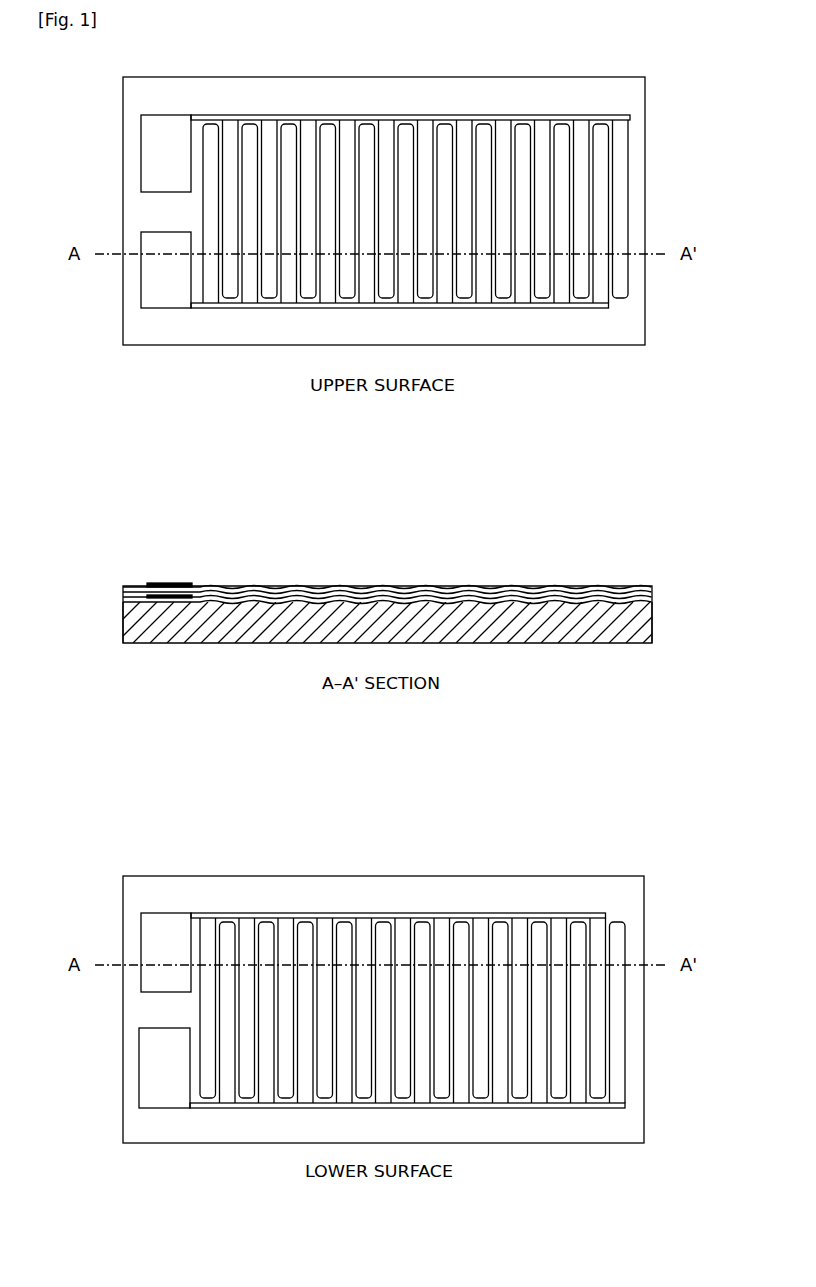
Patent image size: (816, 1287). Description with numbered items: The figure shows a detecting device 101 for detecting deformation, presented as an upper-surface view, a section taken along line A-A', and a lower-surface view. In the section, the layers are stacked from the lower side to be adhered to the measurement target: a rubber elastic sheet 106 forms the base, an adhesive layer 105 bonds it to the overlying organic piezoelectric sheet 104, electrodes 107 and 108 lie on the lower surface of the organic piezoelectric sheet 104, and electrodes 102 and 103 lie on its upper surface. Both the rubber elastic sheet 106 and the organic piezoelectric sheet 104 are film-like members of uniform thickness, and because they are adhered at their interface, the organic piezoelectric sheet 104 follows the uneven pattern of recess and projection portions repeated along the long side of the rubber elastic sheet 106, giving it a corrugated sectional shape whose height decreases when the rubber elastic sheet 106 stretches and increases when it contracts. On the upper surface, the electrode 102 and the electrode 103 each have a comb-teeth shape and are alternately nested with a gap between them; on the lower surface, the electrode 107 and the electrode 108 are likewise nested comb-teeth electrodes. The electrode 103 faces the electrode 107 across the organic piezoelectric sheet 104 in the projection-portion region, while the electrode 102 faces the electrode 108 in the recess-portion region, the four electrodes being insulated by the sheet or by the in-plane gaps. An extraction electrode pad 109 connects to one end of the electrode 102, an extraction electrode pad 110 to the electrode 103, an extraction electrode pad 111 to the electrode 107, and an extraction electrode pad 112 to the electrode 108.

The detecting device 101 is at (290, 1224).
The electrode 102 is at (232, 285).
The electrode 103 is at (210, 285).
The organic piezoelectric sheet 104 is at (652, 588).
The adhesive layer 105 is at (652, 597).
The rubber elastic sheet 106 is at (123, 612).
The electrode 107 is at (210, 937).
The electrode 108 is at (228, 937).
The extraction electrode pad 109 is at (158, 157).
The extraction electrode pad 110 is at (160, 278).
The extraction electrode pad 111 is at (158, 935).
The extraction electrode pad 112 is at (160, 1057).